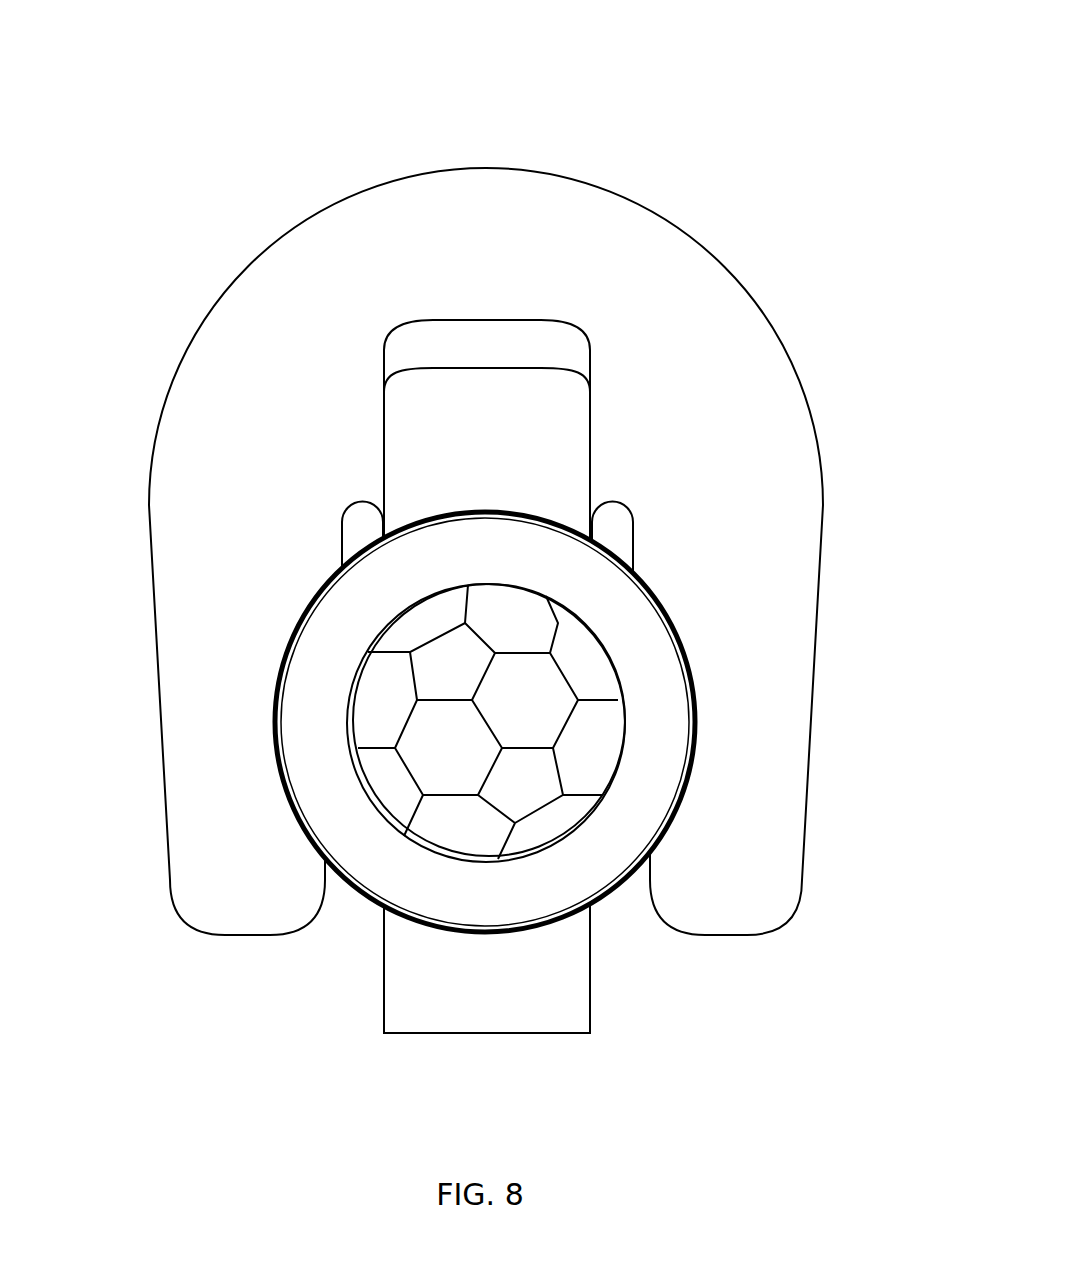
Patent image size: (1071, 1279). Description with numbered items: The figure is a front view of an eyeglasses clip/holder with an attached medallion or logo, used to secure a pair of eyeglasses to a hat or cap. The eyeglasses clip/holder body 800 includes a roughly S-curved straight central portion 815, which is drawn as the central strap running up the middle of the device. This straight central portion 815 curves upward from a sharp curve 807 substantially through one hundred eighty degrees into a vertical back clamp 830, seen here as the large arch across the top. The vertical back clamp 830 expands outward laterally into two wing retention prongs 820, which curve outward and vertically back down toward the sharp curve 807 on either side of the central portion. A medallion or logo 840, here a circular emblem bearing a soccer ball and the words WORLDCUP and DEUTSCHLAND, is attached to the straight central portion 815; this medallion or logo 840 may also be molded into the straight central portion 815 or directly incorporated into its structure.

The eyeglasses clip/holder body 800 is at (488, 575).
The sharp curve 807 is at (535, 1035).
The straight central portion 815 is at (474, 783).
The wing retention prongs 820 is at (212, 598).
The vertical back clamp 830 is at (608, 77).
The medallion or logo 840 is at (347, 887).